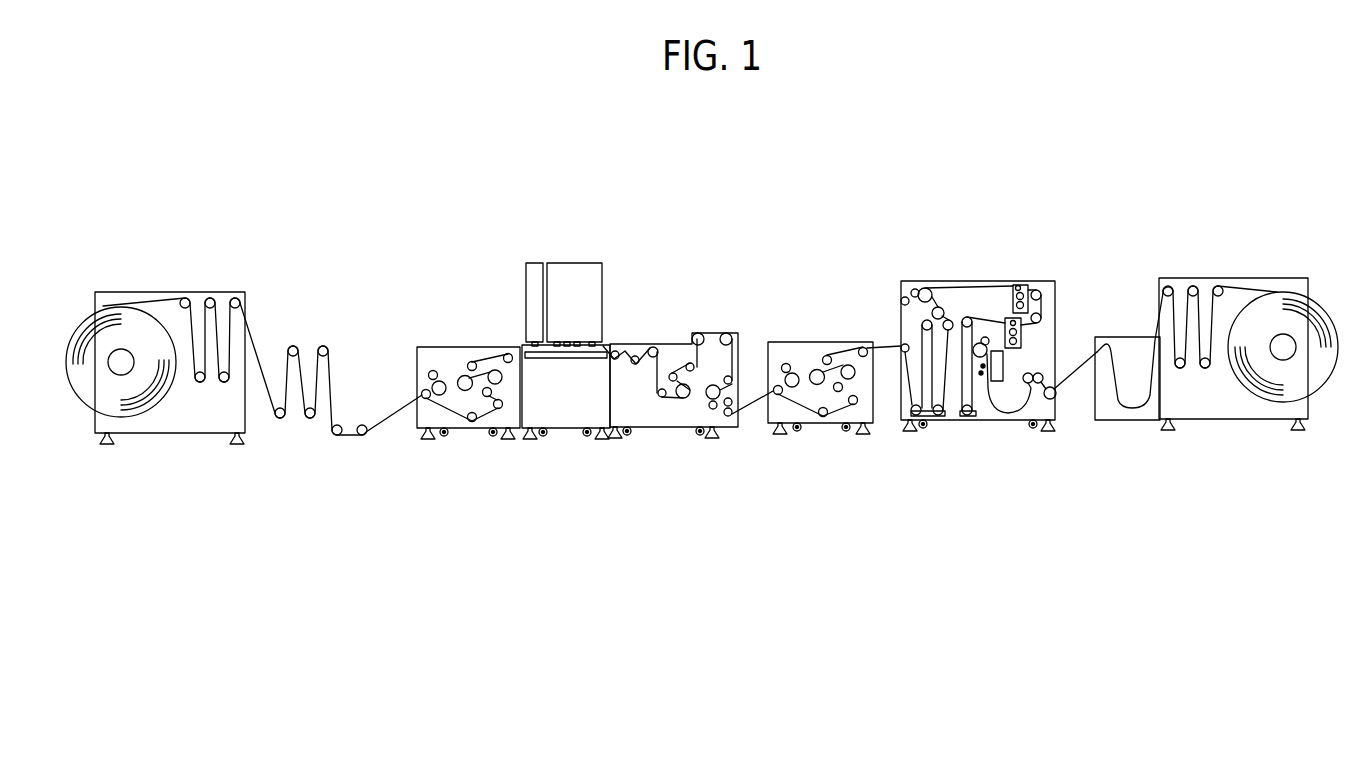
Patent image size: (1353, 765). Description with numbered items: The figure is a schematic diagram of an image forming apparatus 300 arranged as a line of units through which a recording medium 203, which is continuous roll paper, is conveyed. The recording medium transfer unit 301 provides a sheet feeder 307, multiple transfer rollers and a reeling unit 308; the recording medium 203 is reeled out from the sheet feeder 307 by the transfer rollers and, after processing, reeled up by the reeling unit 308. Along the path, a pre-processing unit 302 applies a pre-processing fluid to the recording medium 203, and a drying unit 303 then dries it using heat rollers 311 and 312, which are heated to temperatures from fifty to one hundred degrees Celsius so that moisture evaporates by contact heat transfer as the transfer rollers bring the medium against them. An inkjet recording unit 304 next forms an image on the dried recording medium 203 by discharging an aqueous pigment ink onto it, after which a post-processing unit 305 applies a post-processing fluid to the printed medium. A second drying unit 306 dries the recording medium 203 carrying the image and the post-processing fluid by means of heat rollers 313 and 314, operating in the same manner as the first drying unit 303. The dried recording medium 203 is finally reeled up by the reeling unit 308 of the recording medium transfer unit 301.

The image forming apparatus 300 is at (675, 285).
The recording medium transfer unit 301 is at (1253, 292).
The pre-processing unit 302 is at (980, 280).
The drying unit 303 is at (852, 379).
The inkjet recording unit 304 is at (590, 262).
The post-processing unit 305 is at (533, 262).
The second drying unit 306 is at (491, 372).
The sheet feeder 307 is at (1248, 330).
The reeling unit 308 is at (178, 291).
The heat roller 311 is at (856, 373).
The heat roller 312 is at (810, 376).
The heat roller 313 is at (502, 374).
The heat roller 314 is at (462, 381).
The recording medium 203 is at (603, 347).